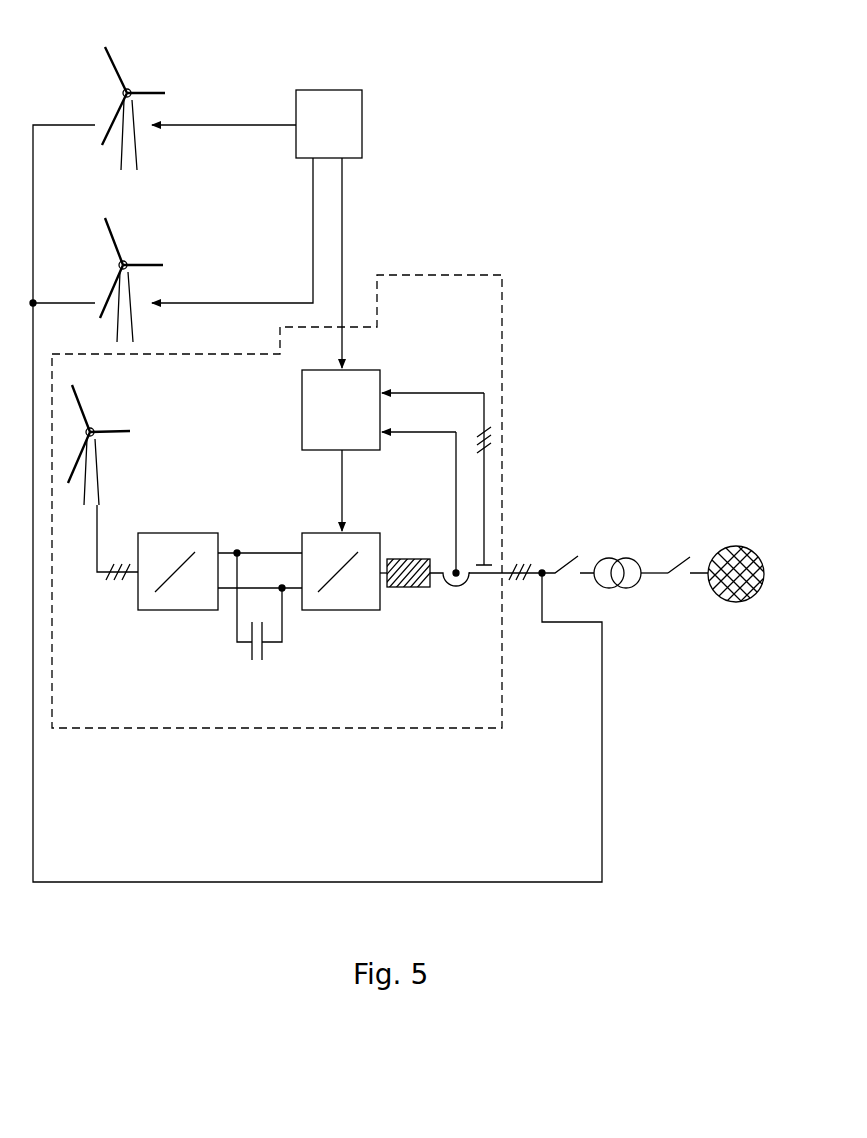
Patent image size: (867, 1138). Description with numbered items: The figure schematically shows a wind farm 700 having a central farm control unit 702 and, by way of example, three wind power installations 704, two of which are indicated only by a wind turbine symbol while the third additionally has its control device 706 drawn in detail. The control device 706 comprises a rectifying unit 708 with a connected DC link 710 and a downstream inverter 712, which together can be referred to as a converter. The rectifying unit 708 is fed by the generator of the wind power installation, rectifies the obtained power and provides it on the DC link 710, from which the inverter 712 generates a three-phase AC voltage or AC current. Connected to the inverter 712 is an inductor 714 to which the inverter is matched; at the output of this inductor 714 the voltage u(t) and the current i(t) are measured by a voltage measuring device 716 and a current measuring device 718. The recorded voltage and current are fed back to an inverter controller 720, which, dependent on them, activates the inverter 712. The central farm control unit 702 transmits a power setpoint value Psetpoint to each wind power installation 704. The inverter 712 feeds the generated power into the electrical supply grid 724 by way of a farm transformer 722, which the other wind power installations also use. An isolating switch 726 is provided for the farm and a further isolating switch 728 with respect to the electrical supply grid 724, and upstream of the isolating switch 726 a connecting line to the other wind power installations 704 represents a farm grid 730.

The wind farm 700 is at (584, 158).
The central farm control unit 702 is at (362, 108).
The wind power installation 704 is at (140, 66).
The control device 706 is at (278, 706).
The rectifying unit 708 is at (148, 610).
The DC link 710 is at (252, 545).
The inverter 712 is at (348, 610).
The inductor 714 is at (406, 587).
The voltage measuring device 716 is at (494, 548).
The current measuring device 718 is at (470, 597).
The inverter controller 720 is at (302, 395).
The farm transformer 722 is at (628, 533).
The electrical supply grid 724 is at (737, 545).
The isolating switch 726 is at (562, 546).
The isolating switch 728 is at (676, 596).
The farm grid 730 is at (602, 737).